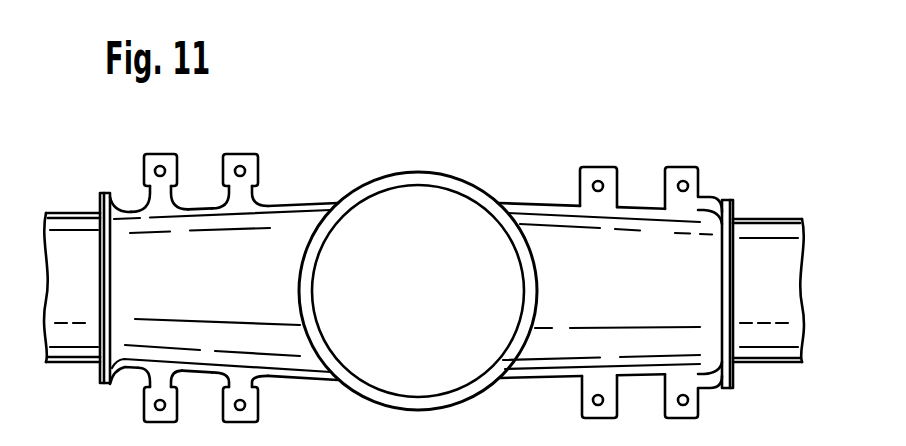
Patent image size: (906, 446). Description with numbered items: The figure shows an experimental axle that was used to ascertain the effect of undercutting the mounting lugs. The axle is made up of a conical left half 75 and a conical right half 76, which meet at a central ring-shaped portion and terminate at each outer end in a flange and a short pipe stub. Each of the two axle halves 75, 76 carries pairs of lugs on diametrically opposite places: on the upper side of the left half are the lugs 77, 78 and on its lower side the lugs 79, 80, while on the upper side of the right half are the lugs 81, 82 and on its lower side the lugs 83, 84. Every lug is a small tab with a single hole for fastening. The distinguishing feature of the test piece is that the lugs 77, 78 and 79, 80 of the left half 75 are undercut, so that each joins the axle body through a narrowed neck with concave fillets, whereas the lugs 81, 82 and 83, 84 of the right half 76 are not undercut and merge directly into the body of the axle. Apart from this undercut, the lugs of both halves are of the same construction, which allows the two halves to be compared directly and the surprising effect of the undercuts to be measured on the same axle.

The conical left half of the axle 75 is at (143, 167).
The conical right half of the axle 76 is at (537, 364).
The lug 77 is at (143, 167).
The lug 78 is at (259, 160).
The lug 79 is at (143, 407).
The lug 80 is at (258, 400).
The lug 81 is at (603, 167).
The lug 82 is at (685, 167).
The lug 83 is at (590, 420).
The lug 84 is at (690, 420).